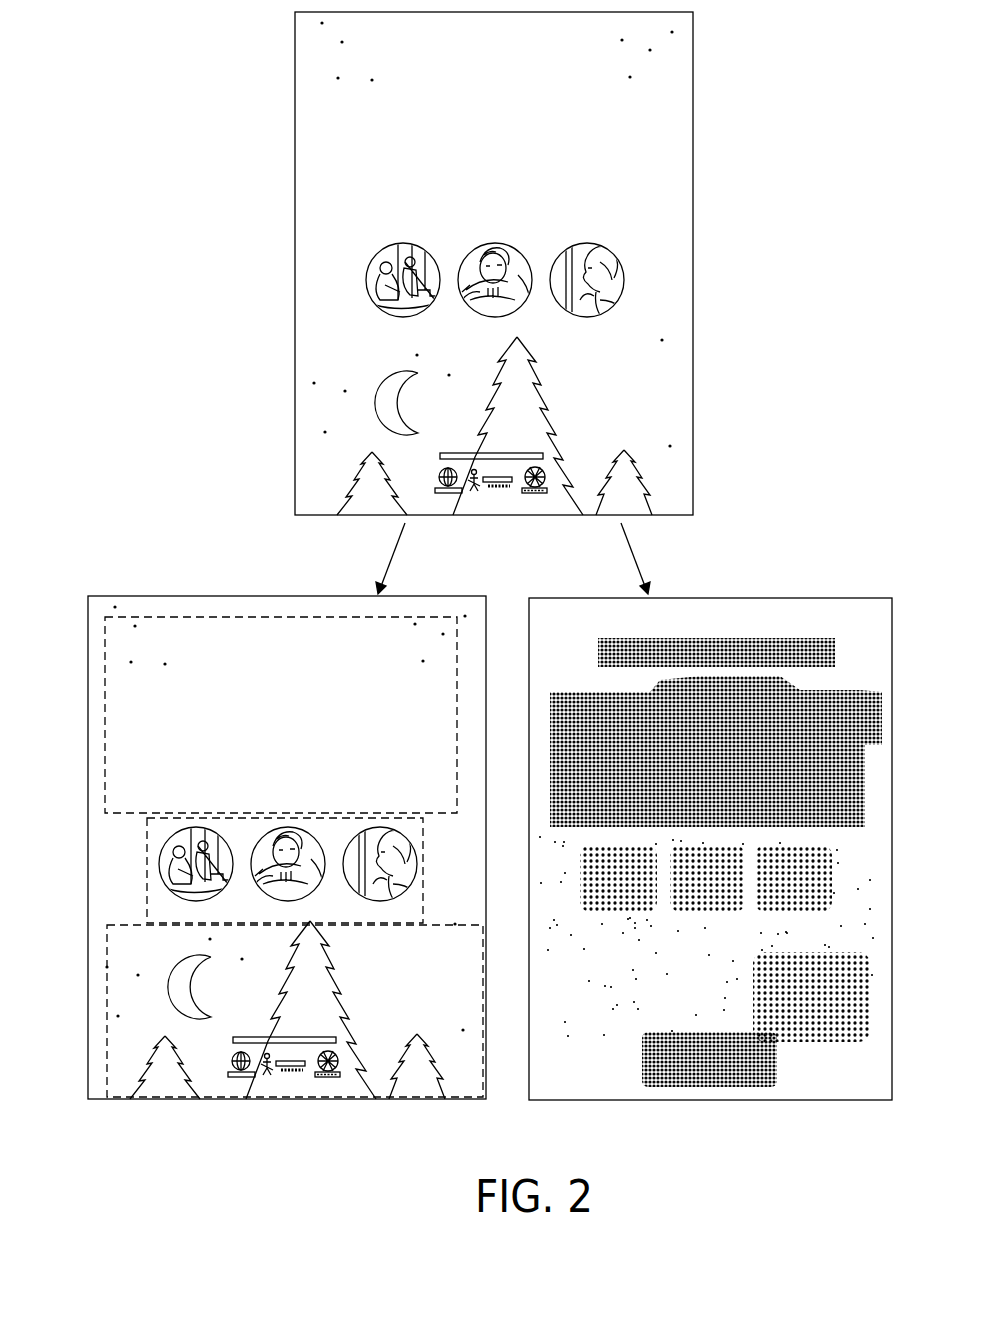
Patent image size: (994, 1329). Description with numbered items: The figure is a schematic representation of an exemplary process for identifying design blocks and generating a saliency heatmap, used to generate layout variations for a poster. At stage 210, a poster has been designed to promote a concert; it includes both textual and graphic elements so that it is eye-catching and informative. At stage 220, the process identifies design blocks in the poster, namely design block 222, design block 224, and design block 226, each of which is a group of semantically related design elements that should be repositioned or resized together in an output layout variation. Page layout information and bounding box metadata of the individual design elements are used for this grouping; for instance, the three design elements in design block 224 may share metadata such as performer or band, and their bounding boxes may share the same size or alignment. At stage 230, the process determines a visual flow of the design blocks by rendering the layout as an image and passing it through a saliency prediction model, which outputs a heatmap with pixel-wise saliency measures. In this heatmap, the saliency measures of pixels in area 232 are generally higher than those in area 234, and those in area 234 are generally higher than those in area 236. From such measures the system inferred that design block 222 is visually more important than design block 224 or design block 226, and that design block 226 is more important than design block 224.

The stage 210 is at (295, 241).
The stage 220 is at (200, 595).
The design block 222 is at (104, 702).
The design block 224 is at (147, 860).
The design block 226 is at (107, 1018).
The stage 230 is at (862, 598).
The area 232 is at (857, 716).
The area 234 is at (830, 878).
The area 236 is at (867, 1065).